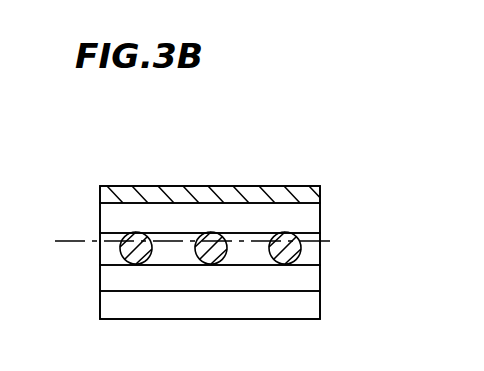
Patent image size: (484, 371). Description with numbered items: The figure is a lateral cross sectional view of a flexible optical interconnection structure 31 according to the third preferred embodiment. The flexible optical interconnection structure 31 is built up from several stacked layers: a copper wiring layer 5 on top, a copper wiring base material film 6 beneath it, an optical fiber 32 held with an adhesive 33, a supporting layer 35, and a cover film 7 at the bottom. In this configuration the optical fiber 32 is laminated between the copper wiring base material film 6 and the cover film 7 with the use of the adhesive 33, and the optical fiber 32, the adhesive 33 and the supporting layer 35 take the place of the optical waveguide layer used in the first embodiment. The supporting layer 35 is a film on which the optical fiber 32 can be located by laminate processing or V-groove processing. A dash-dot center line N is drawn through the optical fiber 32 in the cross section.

The flexible optical interconnection structure 31 is at (103, 167).
The copper wiring layer 5 is at (320, 192).
The copper wiring base material film 6 is at (320, 222).
The center axis line of particle layer N is at (328, 241).
The adhesive 33 is at (300, 247).
The optical fiber 32 is at (304, 258).
The supporting layer 35 is at (317, 280).
The cover film 7 is at (317, 305).